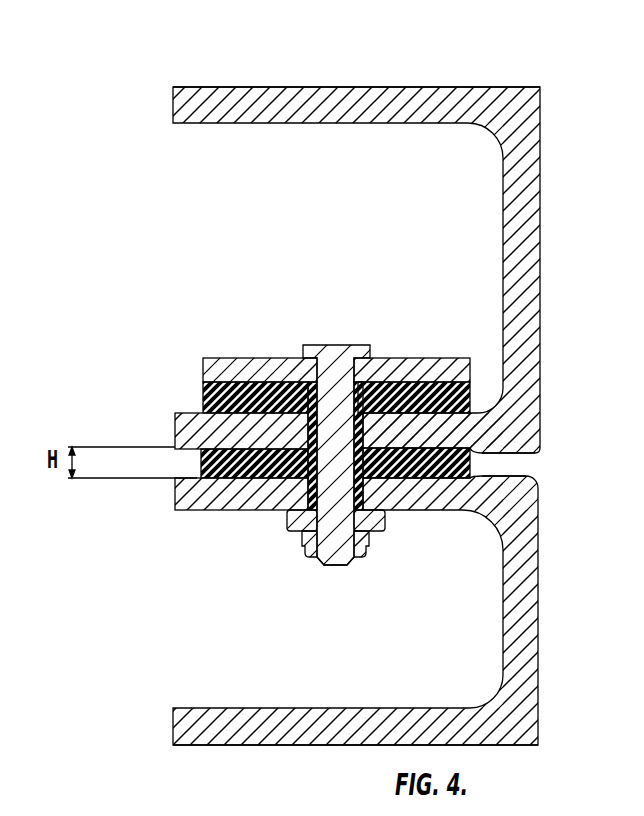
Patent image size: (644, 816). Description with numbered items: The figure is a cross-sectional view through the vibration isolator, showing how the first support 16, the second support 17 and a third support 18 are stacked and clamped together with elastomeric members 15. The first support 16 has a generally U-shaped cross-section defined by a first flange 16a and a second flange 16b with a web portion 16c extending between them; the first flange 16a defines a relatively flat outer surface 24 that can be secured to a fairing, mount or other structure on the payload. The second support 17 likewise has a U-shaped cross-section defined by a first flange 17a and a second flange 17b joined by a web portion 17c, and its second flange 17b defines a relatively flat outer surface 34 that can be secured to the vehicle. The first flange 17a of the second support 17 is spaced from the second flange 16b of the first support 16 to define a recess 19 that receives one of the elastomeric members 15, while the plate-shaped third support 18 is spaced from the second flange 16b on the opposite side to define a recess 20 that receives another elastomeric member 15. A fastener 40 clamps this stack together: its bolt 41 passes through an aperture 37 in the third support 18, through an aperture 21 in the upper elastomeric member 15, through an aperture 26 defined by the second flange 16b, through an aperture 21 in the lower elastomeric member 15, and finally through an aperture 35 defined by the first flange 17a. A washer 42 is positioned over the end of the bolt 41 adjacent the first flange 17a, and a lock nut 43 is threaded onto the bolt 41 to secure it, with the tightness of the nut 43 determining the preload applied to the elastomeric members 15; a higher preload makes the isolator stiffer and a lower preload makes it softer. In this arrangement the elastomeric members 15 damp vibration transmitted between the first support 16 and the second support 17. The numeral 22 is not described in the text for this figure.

The elastomeric member 15 is at (299, 453).
The first support 16 is at (326, 235).
The first flange 16a is at (282, 97).
The second flange 16b is at (183, 430).
The web portion 16c is at (523, 224).
The second support 17 is at (362, 625).
The first flange 17a is at (237, 500).
The second flange 17b is at (304, 710).
The web portion 17c is at (528, 626).
The third support 18 is at (390, 358).
The recess 19 is at (186, 482).
The recess 20 is at (492, 362).
The aperture 21 is at (395, 360).
The gap 22 is at (482, 465).
The outer surface 24 is at (440, 87).
The aperture 26 is at (296, 374).
The outer surface 34 is at (215, 745).
The aperture 35 is at (290, 520).
The aperture 37 is at (372, 358).
The fastener 40 is at (338, 436).
The bolt 41 is at (343, 564).
The washer 42 is at (377, 533).
The lock nut 43 is at (351, 579).